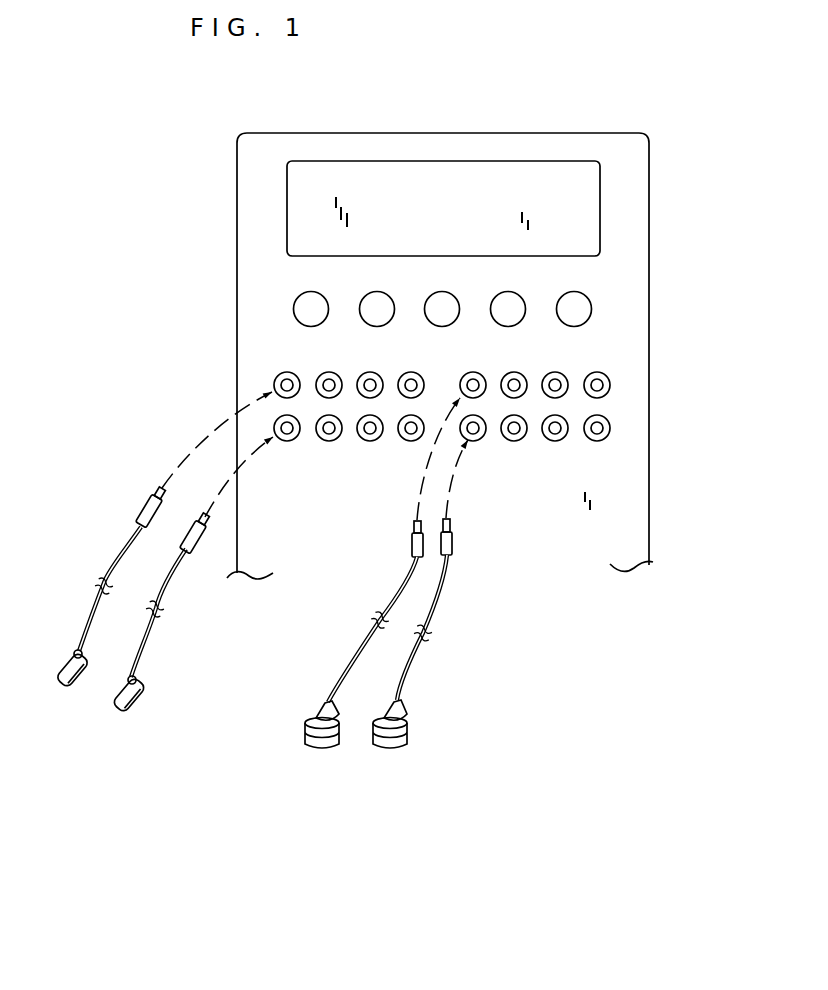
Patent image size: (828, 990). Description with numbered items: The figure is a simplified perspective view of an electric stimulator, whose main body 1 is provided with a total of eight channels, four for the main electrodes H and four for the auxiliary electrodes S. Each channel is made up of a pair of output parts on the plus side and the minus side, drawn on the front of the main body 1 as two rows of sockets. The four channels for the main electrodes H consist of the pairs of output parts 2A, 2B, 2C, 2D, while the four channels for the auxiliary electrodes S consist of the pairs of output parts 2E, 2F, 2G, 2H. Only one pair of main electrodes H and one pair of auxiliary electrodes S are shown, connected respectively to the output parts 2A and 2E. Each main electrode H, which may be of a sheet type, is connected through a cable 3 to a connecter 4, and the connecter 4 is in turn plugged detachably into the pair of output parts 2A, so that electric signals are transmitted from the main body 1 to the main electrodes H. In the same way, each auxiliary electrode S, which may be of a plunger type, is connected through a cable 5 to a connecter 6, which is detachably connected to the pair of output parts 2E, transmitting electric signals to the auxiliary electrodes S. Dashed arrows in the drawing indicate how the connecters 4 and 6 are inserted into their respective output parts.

The main body 1 is at (628, 200).
The output part 2A is at (295, 393).
The output part 2B is at (338, 421).
The output part 2C is at (378, 394).
The output part 2D is at (420, 422).
The output part 2E is at (482, 393).
The output part 2F is at (524, 425).
The output part 2G is at (563, 394).
The output part 2H is at (605, 425).
The cable 3 is at (95, 603).
The connecter 4 is at (141, 512).
The cable 5 is at (348, 660).
The connecter 6 is at (412, 544).
The main electrode H is at (68, 678).
The auxiliary electrode S is at (318, 747).